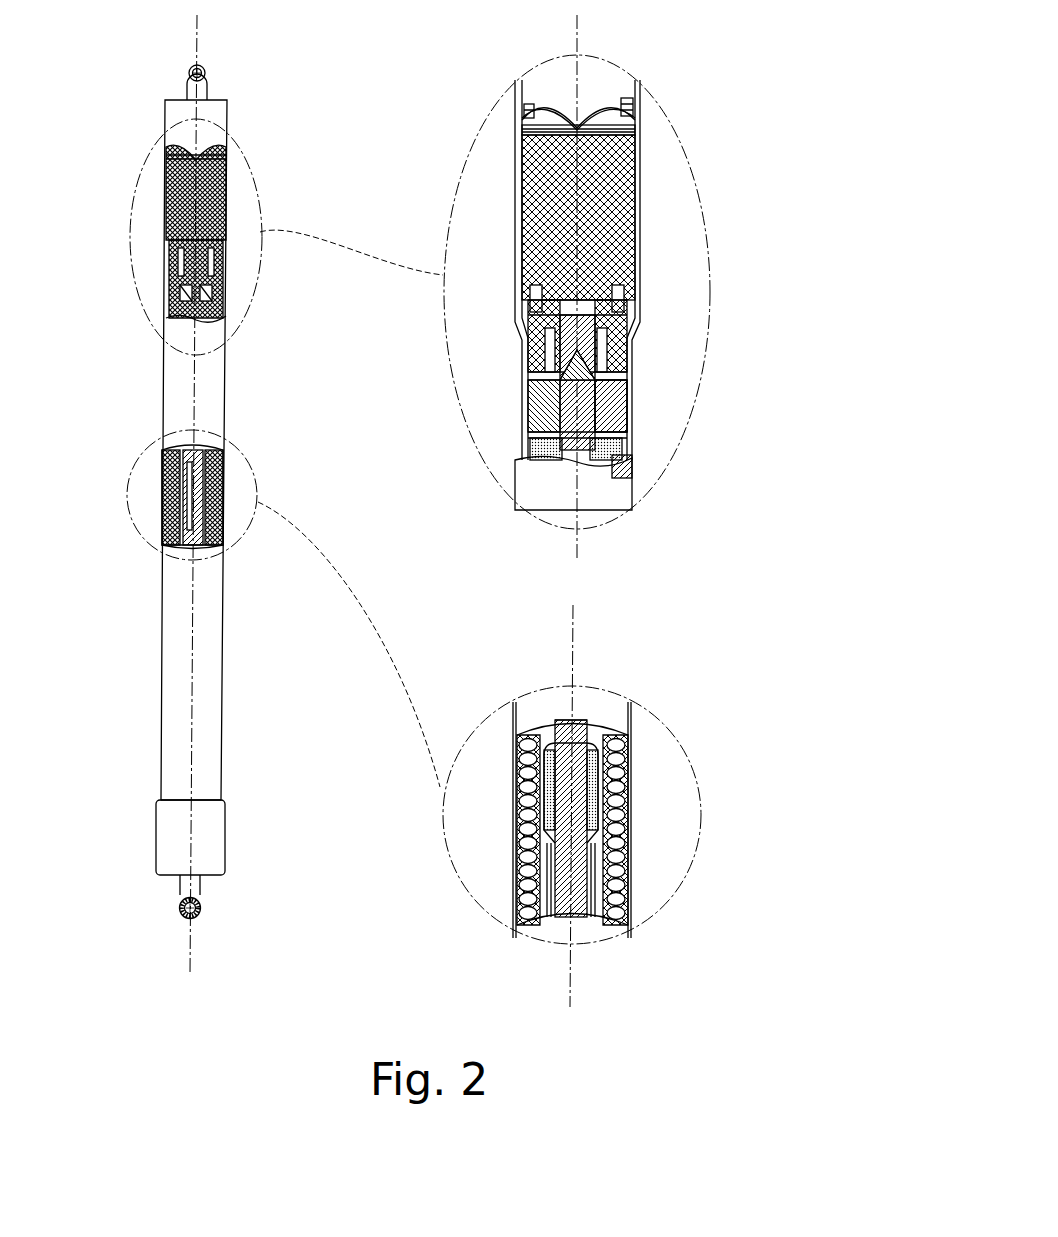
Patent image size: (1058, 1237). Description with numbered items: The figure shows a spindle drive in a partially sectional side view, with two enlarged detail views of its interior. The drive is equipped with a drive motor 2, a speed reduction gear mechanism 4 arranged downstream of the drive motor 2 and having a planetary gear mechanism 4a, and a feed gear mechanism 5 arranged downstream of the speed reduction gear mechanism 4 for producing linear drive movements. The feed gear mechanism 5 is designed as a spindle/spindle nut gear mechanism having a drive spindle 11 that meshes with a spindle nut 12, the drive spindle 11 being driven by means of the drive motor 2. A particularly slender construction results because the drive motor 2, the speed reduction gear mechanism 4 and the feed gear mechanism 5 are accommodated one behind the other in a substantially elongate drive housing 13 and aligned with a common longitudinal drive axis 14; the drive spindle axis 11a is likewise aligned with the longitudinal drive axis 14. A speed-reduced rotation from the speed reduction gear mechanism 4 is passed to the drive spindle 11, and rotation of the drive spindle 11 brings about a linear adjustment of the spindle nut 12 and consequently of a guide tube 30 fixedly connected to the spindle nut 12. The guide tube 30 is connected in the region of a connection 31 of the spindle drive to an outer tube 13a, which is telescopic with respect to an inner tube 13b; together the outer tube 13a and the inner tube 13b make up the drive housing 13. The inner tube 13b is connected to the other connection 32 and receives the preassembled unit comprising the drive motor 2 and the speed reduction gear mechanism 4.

The drive motor 2 is at (607, 195).
The speed reduction gear mechanism 4 is at (603, 287).
The planetary gear mechanism 4a is at (639, 416).
The feed gear mechanism 5 is at (256, 504).
The drive spindle 11 is at (663, 820).
The drive spindle axis 11a is at (570, 983).
The spindle nut 12 is at (632, 775).
The drive housing 13 is at (244, 429).
The outer tube 13a is at (210, 737).
The inner tube 13b is at (218, 112).
The longitudinal drive axis 14 is at (190, 942).
The guide tube 30 is at (632, 912).
The connection 31 is at (145, 936).
The other connection 32 is at (182, 70).